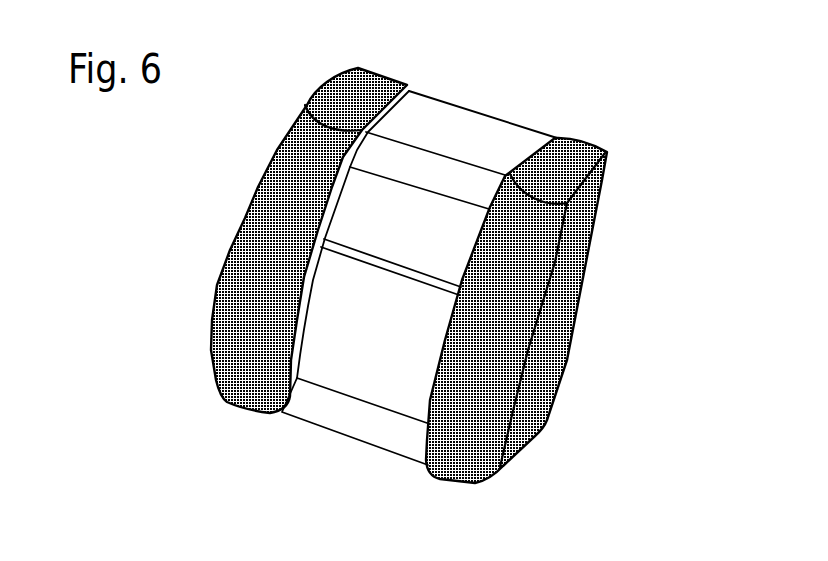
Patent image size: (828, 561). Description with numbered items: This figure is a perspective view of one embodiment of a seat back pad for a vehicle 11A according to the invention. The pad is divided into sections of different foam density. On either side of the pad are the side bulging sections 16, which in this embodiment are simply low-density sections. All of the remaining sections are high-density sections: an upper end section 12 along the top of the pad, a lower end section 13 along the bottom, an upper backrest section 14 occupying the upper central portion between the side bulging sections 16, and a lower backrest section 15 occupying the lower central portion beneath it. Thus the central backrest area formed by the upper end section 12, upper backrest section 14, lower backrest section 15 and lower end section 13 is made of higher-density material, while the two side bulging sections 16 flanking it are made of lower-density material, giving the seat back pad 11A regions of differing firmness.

The seat back pad for a vehicle 11A is at (424, 271).
The upper end section 12 is at (457, 125).
The lower end section 13 is at (340, 412).
The upper backrest section 14 is at (452, 238).
The lower backrest section 15 is at (415, 359).
The side bulging sections 16 is at (263, 267).